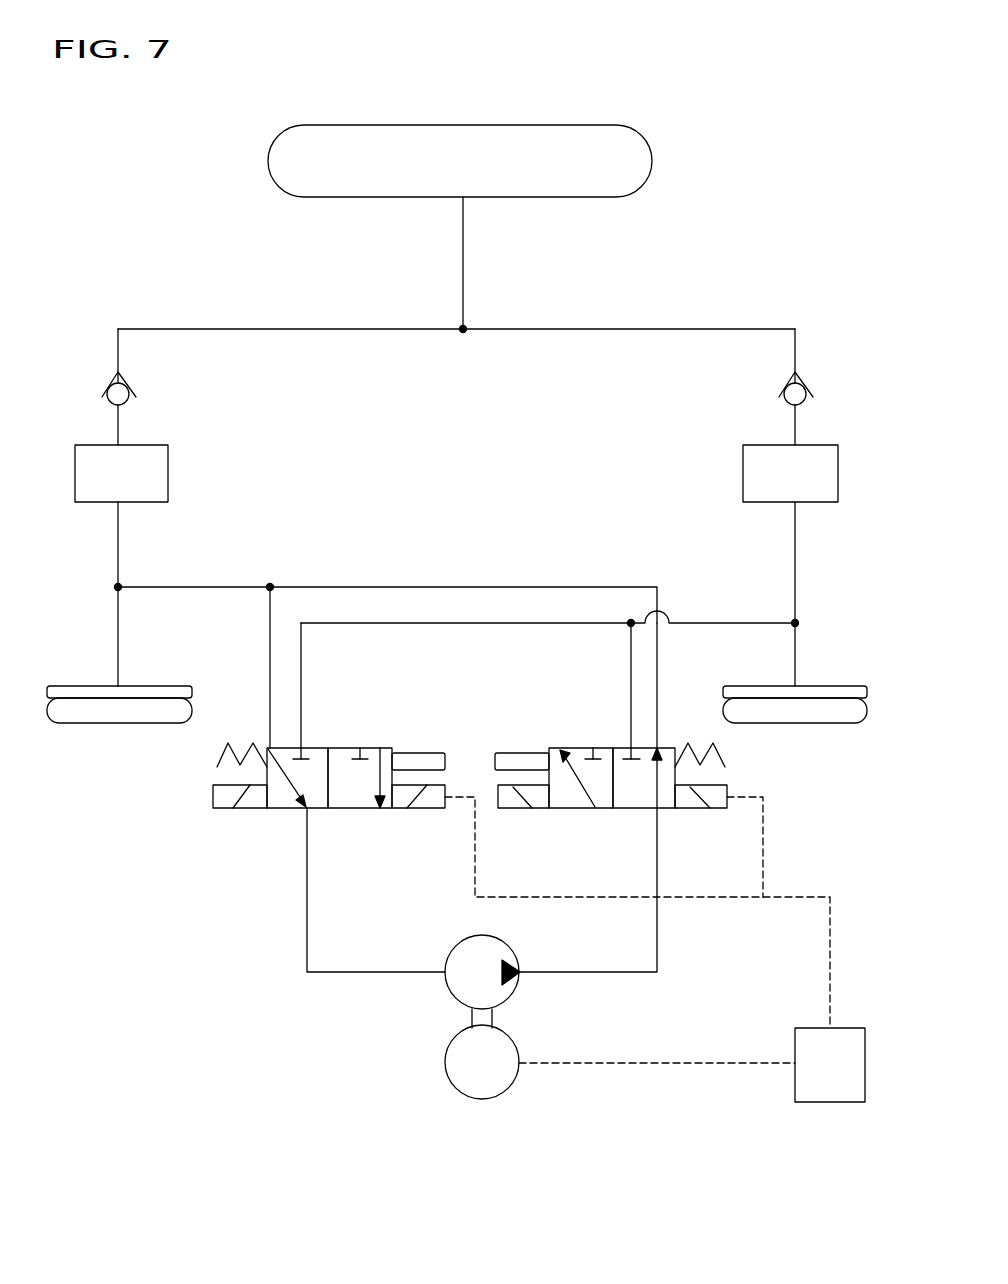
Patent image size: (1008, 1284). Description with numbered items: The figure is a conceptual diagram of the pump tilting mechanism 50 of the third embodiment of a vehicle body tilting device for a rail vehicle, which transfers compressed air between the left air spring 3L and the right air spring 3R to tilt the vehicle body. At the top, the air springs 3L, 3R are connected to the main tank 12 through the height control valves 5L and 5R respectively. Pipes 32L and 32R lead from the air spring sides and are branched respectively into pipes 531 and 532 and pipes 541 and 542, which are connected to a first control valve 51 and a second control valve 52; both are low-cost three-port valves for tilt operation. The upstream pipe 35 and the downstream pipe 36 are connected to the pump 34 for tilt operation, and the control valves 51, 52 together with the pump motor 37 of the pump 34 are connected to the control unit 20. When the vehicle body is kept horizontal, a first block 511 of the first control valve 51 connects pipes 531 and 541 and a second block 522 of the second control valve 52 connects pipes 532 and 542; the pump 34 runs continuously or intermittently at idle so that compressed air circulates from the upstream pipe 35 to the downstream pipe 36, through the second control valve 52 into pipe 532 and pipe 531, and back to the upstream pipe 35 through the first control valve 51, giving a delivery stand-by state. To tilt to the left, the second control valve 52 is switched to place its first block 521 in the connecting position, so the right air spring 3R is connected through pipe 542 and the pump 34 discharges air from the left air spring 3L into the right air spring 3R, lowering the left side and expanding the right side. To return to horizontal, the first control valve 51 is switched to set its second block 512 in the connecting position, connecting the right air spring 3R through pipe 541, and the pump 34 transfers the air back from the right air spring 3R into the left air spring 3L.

The main tank 12 is at (432, 138).
The height control valve 5L is at (150, 458).
The height control valve 5R is at (823, 462).
The left air spring 3L is at (119, 710).
The right air spring 3R is at (797, 712).
The pipe 32L is at (217, 584).
The pipe 32R is at (705, 620).
The pump tilting mechanism 50 is at (453, 520).
The pipe 531 is at (270, 626).
The pipe 532 is at (660, 655).
The pipe 541 is at (302, 653).
The pipe 542 is at (630, 657).
The first control valve 51 is at (329, 784).
The first block 511 is at (281, 804).
The second block 512 is at (353, 806).
The second control valve 52 is at (611, 786).
The first block 521 is at (562, 804).
The second block 522 is at (640, 803).
The upstream pipe 35 is at (306, 938).
The downstream pipe 36 is at (660, 947).
The pump 34 is at (503, 993).
The pump motor 37 is at (502, 1083).
The control unit 20 is at (837, 1088).